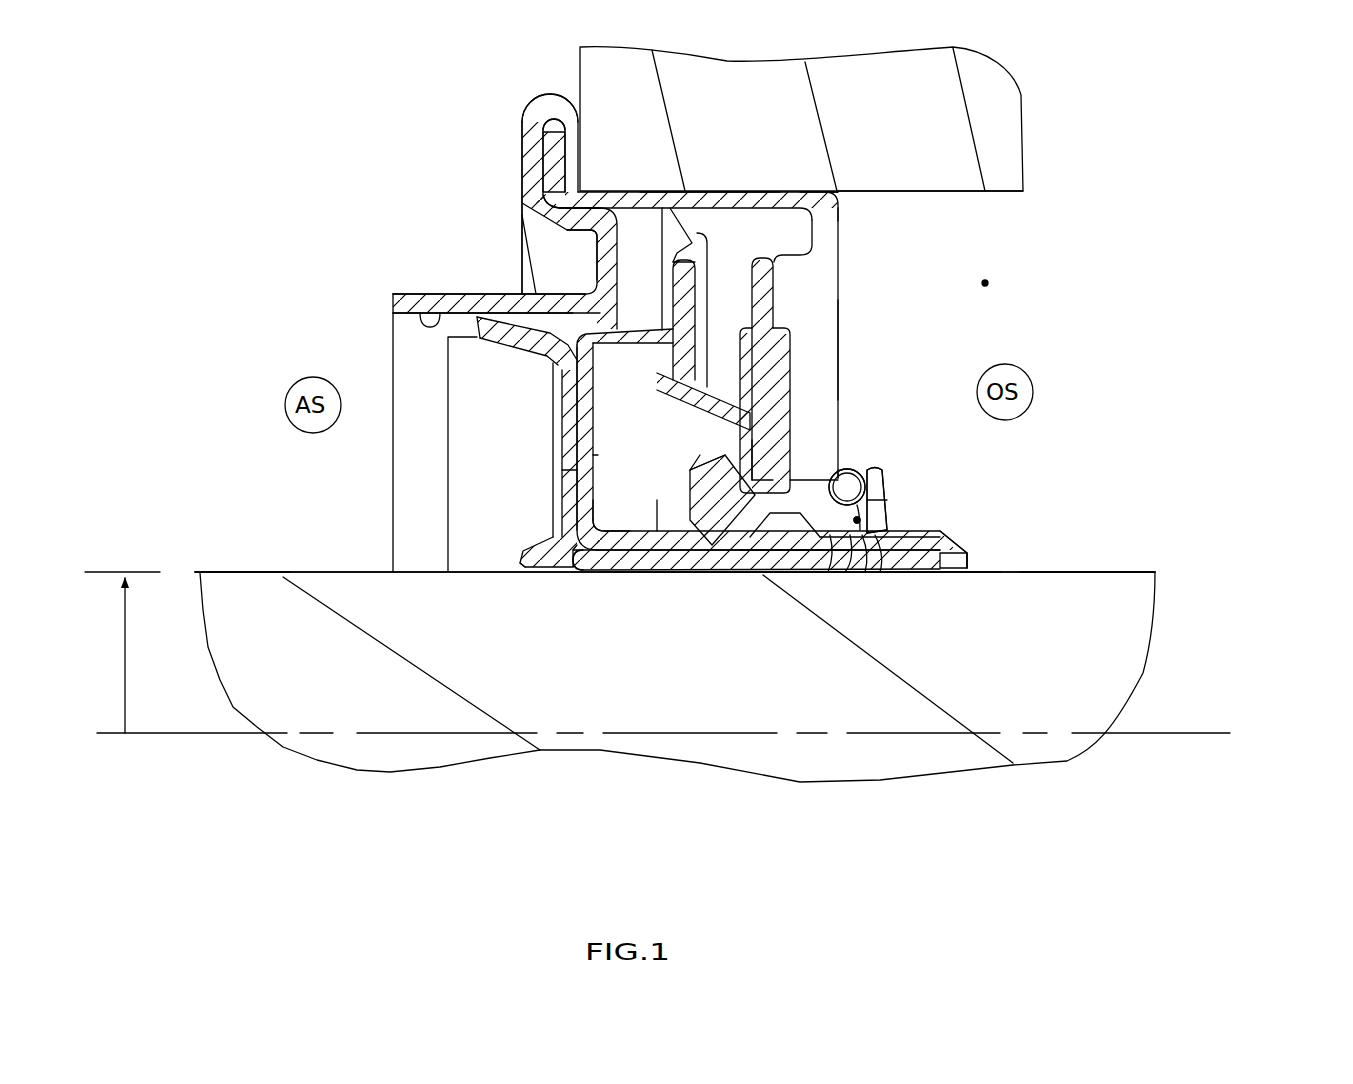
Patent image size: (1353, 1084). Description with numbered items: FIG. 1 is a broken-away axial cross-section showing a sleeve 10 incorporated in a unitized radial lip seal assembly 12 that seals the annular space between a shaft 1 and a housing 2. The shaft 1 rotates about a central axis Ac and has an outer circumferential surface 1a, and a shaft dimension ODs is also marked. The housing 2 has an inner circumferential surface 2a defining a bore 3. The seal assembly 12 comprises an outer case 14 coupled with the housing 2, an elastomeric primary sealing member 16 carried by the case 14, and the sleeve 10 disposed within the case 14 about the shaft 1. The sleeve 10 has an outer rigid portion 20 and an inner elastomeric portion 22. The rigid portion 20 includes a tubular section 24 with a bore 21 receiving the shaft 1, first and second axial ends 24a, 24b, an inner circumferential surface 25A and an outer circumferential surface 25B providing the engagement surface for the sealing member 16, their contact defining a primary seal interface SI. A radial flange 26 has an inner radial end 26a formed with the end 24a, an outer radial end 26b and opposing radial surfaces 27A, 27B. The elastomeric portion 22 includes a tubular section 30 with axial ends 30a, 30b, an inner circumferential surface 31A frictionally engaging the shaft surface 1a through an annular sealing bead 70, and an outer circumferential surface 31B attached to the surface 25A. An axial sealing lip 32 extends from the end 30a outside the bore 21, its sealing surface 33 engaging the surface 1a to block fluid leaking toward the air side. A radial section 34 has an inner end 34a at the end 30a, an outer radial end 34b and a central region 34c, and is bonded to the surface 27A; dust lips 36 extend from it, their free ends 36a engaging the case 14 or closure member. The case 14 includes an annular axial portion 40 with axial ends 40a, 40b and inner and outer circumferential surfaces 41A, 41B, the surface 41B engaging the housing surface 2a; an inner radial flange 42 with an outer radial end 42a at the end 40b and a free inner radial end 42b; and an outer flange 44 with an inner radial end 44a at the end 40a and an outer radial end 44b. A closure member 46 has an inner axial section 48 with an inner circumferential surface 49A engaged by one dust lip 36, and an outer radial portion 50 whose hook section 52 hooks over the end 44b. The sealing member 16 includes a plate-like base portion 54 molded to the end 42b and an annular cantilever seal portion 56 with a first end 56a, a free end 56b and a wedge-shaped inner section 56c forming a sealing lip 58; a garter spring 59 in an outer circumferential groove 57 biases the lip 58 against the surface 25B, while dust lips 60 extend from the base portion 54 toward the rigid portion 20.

The shaft 1 is at (240, 535).
The outer circumferential surface 1a is at (265, 572).
The sleeve 10 is at (597, 636).
The housing 2 is at (1020, 216).
The inner circumferential surface 2a is at (940, 195).
The bore 3 is at (985, 283).
The unitized radial lip seal assembly 12 is at (905, 340).
The outer case 14 is at (850, 291).
The elastomeric primary sealing member 16 is at (898, 460).
The outer rigid portion 20 is at (920, 520).
The bore 21 is at (945, 565).
The inner elastomeric portion 22 is at (910, 600).
The tubular section 24 is at (720, 585).
The first axial end 24a is at (602, 527).
The second axial end 24b is at (950, 545).
The inner circumferential surface 25A is at (805, 560).
The outer circumferential surface 25B is at (668, 520).
The radial flange 26 is at (570, 444).
The inner radial end 26a is at (590, 520).
The outer radial end 26b is at (708, 245).
The radial surface 27A is at (557, 470).
The radial surface 27B is at (598, 458).
The tubular section 30 is at (685, 575).
The first axial end 30a is at (575, 573).
The second axial end 30b is at (945, 562).
The inner circumferential surface 31A is at (757, 572).
The outer circumferential surface 31B is at (822, 575).
The axial sealing lip 32 is at (513, 548).
The inner circumferential sealing surface 33 is at (535, 572).
The radial section 34 is at (552, 408).
The inner end 34a is at (565, 523).
The outer radial end 34b is at (672, 262).
The seal case flange 34c is at (573, 352).
The dust lip 36 is at (487, 341).
The free end 36a is at (678, 214).
The annular axial portion 40 is at (748, 185).
The axial end 40a is at (572, 188).
The axial end 40b is at (822, 192).
The inner circumferential surface 41A is at (745, 212).
The outer circumferential surface 41B is at (695, 192).
The inner radial flange 42 is at (783, 308).
The outer radial end 42a is at (843, 213).
The inner radial end 42b is at (762, 468).
The outer flange 44 is at (565, 170).
The inner radial end 44a is at (557, 191).
The outer radial end 44b is at (560, 138).
The closure member 46 is at (520, 146).
The inner axial section 48 is at (456, 291).
The inner circumferential surface 49A is at (424, 312).
The outer radial portion 50 is at (570, 228).
The hook section 52 is at (552, 100).
The base portion 54 is at (800, 378).
The annular cantilever seal portion 56 is at (885, 485).
The first end 56a is at (765, 490).
The free end 56b is at (883, 500).
The wedge-shaped inner section 56c is at (865, 517).
The outer circumferential groove 57 is at (842, 490).
The inner circumferential sealing lip 58 is at (873, 560).
The garter spring 59 is at (845, 480).
The dust lip 60 is at (690, 383).
The annular sealing bead 70 is at (633, 580).
The primary seal interface SI is at (838, 560).
The central axis Ac is at (1209, 732).
The shaft outer diameter ODs is at (122, 691).